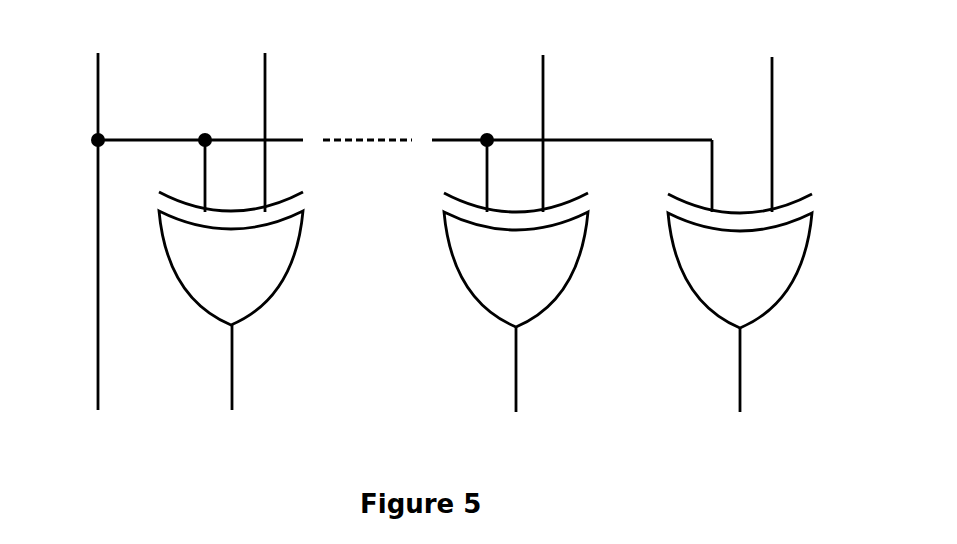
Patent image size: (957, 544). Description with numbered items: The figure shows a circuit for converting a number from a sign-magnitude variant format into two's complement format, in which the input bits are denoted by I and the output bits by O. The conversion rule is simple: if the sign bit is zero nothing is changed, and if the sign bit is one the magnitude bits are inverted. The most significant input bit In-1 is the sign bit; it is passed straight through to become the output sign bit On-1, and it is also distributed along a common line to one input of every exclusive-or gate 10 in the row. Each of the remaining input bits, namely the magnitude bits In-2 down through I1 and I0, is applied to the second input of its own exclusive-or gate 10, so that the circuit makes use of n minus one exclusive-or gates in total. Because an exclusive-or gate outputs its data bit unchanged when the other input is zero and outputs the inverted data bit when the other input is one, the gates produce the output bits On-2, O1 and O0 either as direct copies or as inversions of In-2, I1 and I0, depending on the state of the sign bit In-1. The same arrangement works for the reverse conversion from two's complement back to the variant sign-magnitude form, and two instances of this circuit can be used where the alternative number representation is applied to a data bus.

The exclusive-or gate 10 is at (817, 257).
The input sign bit In-1 is at (388, 146).
The input magnitude bit In-2 is at (285, 115).
The input magnitude bit I1 is at (551, 116).
The input magnitude bit I0 is at (780, 117).
The output sign bit On-1 is at (110, 300).
The output bit On-2 is at (247, 393).
The output bit O1 is at (520, 394).
The output bit O0 is at (741, 395).